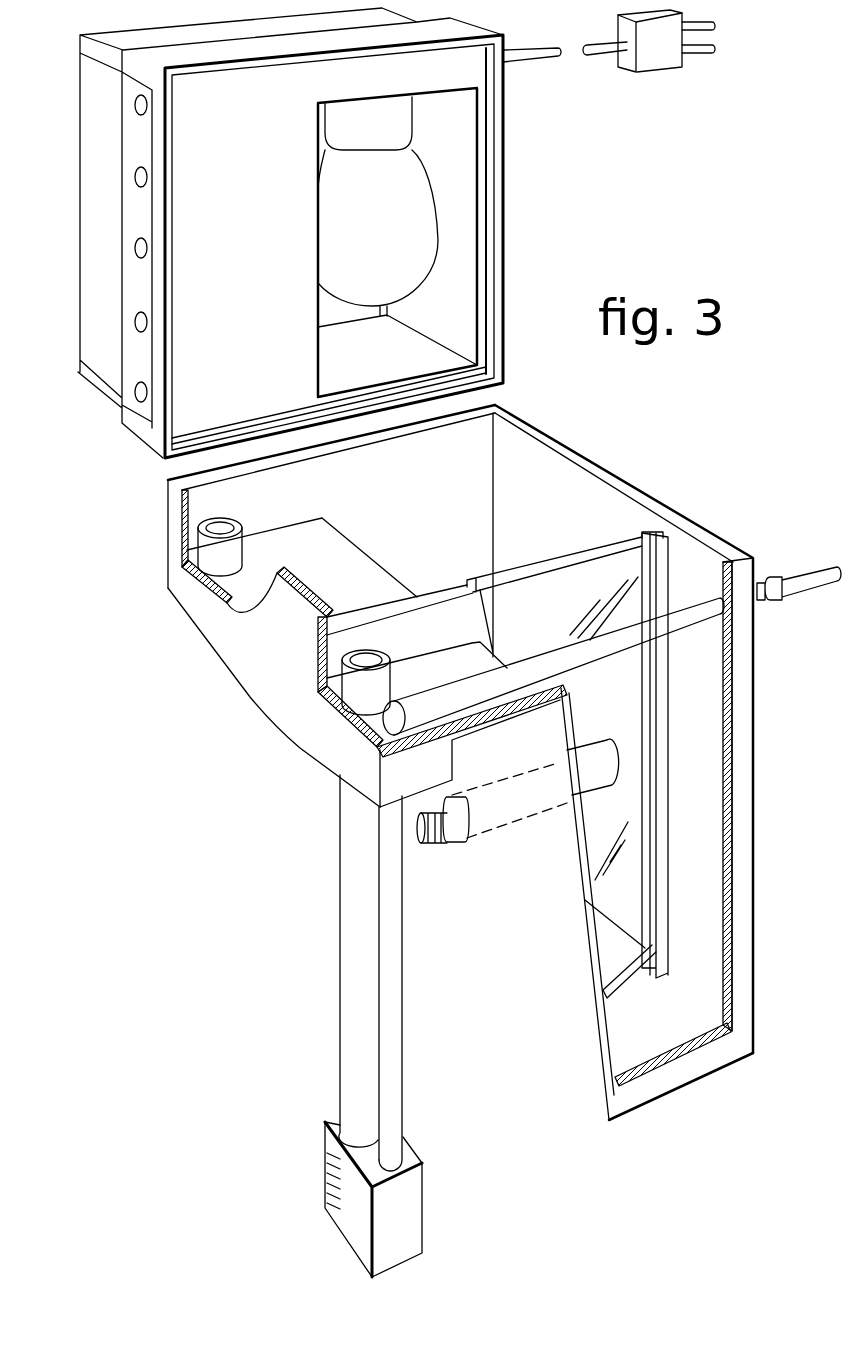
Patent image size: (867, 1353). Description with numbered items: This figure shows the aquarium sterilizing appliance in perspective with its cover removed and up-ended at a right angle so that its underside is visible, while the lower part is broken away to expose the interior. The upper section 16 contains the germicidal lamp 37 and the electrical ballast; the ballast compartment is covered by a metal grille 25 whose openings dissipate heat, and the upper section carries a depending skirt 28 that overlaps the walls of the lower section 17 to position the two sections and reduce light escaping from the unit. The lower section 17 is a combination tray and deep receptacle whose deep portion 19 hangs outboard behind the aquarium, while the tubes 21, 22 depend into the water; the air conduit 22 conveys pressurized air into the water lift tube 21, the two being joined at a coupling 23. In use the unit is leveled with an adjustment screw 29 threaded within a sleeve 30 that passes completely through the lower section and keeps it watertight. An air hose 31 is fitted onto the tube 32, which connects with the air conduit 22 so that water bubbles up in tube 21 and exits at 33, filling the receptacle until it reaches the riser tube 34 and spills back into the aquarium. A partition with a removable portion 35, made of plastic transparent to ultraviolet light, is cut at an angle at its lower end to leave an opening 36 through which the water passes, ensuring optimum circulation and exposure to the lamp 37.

The upper section 16 is at (510, 203).
The lower section 17 is at (618, 457).
The deep portion 19 is at (743, 908).
The water lift tube 21 is at (350, 1005).
The air conduit 22 is at (400, 1048).
The base block 23 is at (405, 1207).
The metal grille 25 is at (95, 237).
The depending skirt 28 is at (488, 283).
The adjustment screw 29 is at (437, 840).
The sleeve 30 is at (598, 773).
The air hose 31 is at (807, 582).
The tube 32 is at (600, 647).
The water exit 33 is at (365, 660).
The riser tube 34 is at (222, 527).
The removable portion of partition 35 is at (537, 572).
The opening 36 is at (632, 977).
The germicidal lamp 37 is at (392, 238).